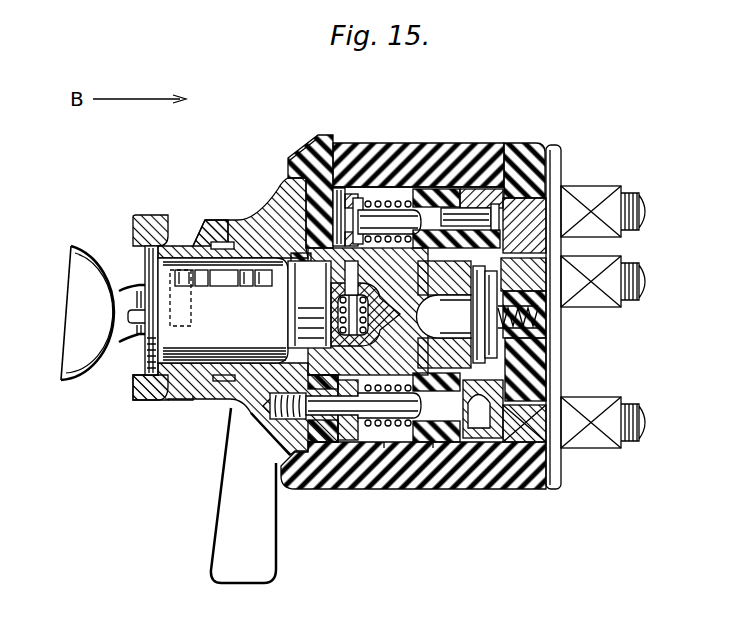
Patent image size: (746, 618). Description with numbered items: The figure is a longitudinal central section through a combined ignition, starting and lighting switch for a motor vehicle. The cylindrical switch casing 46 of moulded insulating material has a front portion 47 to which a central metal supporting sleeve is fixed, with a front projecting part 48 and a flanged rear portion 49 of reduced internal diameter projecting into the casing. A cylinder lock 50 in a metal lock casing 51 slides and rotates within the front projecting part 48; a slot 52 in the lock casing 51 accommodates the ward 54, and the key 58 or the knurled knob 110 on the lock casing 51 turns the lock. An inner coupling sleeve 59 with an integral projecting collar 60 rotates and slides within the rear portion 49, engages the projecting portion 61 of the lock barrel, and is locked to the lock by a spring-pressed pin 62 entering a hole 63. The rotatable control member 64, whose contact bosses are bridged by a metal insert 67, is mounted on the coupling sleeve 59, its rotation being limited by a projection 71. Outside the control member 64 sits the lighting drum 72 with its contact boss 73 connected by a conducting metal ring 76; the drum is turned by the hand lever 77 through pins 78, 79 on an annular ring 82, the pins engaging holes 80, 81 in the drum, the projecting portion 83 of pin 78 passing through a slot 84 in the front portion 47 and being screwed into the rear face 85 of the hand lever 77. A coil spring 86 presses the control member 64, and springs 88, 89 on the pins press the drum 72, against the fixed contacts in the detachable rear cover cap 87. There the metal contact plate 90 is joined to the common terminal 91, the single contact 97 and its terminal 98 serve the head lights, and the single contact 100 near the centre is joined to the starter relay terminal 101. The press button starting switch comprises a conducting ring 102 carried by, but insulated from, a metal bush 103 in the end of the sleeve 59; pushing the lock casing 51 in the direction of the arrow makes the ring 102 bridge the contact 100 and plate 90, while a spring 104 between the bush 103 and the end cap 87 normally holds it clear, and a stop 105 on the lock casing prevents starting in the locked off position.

The switch casing 46 is at (470, 156).
The front portion of the casing 47 is at (298, 472).
The front projecting part of the supporting sleeve 48 is at (218, 234).
The flanged rear portion of the supporting sleeve 49 is at (268, 213).
The cylinder lock 50 is at (136, 350).
The lock casing 51 is at (196, 392).
The slot 52 is at (163, 267).
The ward 54 is at (202, 262).
The key 58 is at (72, 284).
The inner coupling sleeve 59 is at (283, 176).
The projecting collar 60 is at (378, 446).
The projecting portion of the lock barrel 61 is at (307, 311).
The pin 62 is at (303, 208).
The hole 63 is at (297, 167).
The rotatable control member 64 is at (520, 440).
The metal insert 67 is at (440, 415).
The projection 71 is at (383, 200).
The drum 72 is at (448, 158).
The contact boss 73 is at (546, 139).
The conducting metal ring 76 is at (420, 436).
The hand lever 77 is at (216, 500).
The pin 78 is at (370, 446).
The pin 79 is at (360, 195).
The hole 80 is at (408, 440).
The hole 81 is at (406, 198).
The annular ring 82 is at (333, 195).
The projecting portion of the pin 83 is at (297, 401).
The slot 84 is at (302, 487).
The rear face of the hand lever 85 is at (262, 402).
The coil spring 86 is at (435, 430).
The rear cover cap 87 is at (515, 150).
The spring 88 is at (350, 440).
The spring 89 is at (366, 192).
The metal contact plate 90 is at (500, 410).
The terminal 91 is at (594, 416).
The single contact 97 is at (523, 220).
The terminal 98 is at (580, 193).
The single contact 100 is at (443, 307).
The terminal 101 is at (600, 270).
The conducting ring 102 is at (472, 345).
The metal bush 103 is at (484, 330).
The spring 104 is at (508, 312).
The stop 105 is at (168, 309).
The knurled knob 110 is at (140, 214).